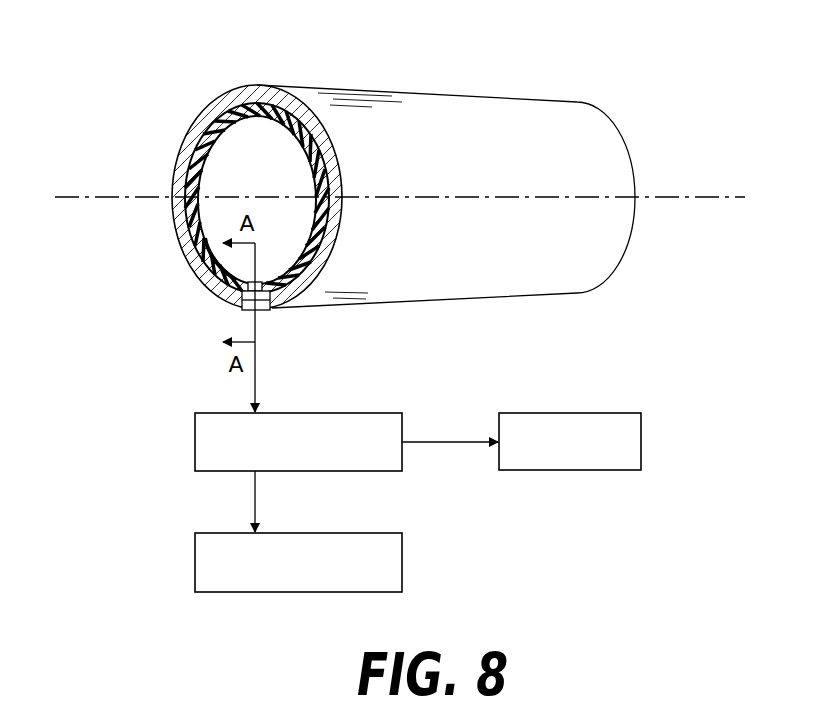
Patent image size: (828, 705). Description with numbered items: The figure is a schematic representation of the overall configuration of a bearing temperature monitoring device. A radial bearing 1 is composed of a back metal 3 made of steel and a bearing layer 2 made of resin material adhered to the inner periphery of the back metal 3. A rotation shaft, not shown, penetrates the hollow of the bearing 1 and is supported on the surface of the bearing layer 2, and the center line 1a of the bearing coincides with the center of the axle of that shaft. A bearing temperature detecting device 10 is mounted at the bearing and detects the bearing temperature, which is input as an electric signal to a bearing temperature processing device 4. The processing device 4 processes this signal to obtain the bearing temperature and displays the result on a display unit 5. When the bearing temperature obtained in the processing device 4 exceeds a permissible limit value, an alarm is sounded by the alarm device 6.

The radial bearing 1 is at (519, 79).
The center line of the bearing 1a is at (689, 201).
The bearing layer 2 is at (190, 252).
The back metal 3 is at (243, 88).
The bearing temperature processing device 4 is at (325, 412).
The display unit 5 is at (278, 593).
The alarm device 6 is at (557, 471).
The bearing temperature detecting device 10 is at (233, 317).